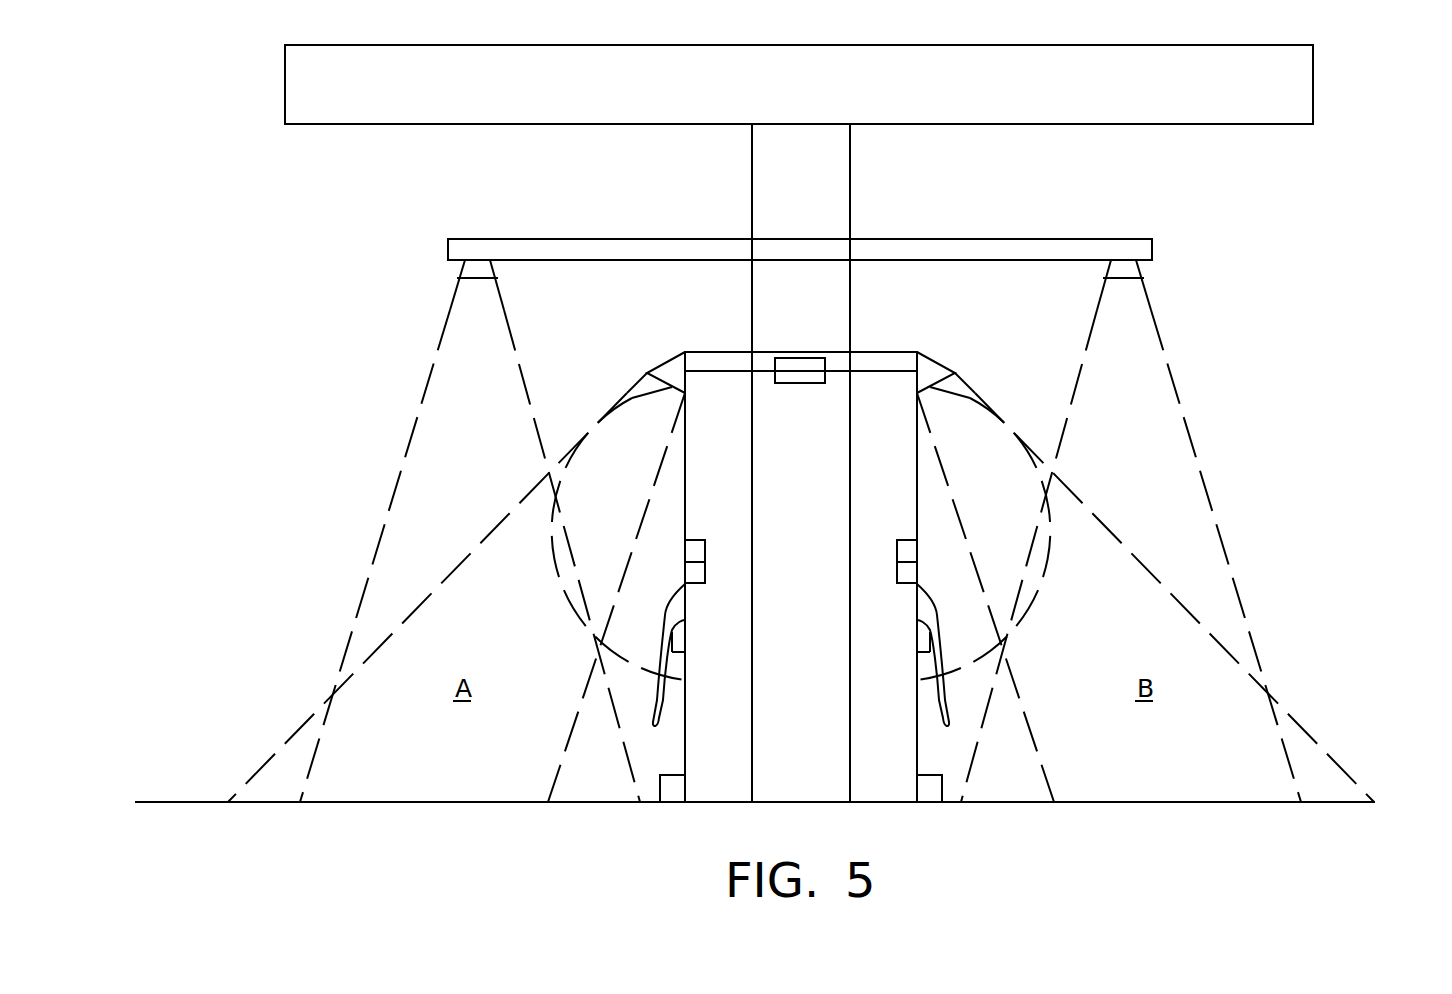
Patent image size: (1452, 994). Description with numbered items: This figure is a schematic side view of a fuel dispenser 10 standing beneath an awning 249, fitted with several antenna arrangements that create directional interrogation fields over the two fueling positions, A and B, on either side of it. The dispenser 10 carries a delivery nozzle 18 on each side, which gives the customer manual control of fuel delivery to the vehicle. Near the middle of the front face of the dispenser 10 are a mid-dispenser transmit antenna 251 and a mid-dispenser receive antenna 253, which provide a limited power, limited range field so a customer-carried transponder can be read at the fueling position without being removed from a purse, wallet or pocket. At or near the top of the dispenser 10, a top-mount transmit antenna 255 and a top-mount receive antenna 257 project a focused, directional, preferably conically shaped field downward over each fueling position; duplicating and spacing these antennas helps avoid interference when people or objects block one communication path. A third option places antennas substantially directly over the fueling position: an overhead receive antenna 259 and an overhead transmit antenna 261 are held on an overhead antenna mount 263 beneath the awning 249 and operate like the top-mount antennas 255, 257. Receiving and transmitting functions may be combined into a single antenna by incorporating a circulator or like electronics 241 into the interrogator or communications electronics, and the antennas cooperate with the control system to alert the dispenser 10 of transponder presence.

The awning 249 is at (822, 96).
The overhead antenna mount 263 is at (596, 239).
The overhead receive antenna 259 is at (462, 272).
The overhead transmit antenna 261 is at (1140, 274).
The fuel dispenser 10 is at (882, 351).
The circulator or like electronics 241 is at (800, 372).
The top-mount transmit antenna 255 is at (663, 362).
The top-mount receive antenna 257 is at (929, 354).
The mid-dispenser transmit antenna 251 is at (894, 546).
The mid-dispenser receive antenna 253 is at (894, 578).
The delivery nozzle 18 is at (684, 633).